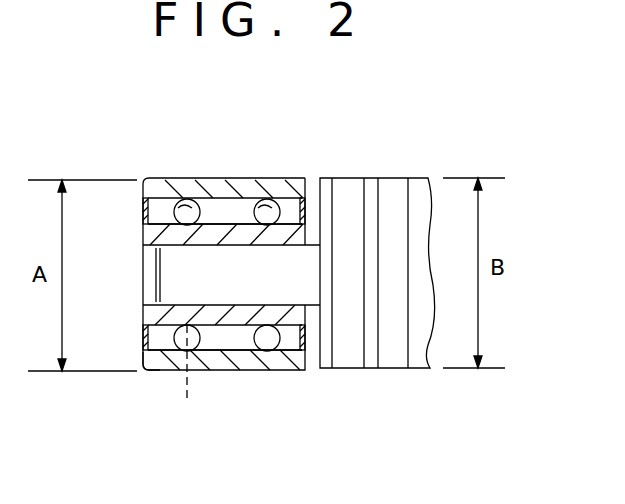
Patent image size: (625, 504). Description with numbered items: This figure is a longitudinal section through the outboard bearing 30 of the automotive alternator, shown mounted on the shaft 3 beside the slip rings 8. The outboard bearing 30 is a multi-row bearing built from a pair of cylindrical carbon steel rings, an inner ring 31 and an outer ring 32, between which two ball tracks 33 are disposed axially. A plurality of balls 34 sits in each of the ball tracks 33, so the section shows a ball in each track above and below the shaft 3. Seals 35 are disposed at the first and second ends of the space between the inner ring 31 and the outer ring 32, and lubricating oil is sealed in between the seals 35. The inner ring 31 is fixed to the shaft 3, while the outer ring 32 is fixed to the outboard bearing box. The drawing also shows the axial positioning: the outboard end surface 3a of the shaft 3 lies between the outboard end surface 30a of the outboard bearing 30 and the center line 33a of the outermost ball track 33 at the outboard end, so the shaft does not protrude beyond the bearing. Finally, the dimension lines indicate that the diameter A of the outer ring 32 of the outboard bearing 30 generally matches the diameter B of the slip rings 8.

The shaft 3 is at (172, 270).
The outboard end surface of the shaft 3a is at (158, 285).
The slip rings 8 is at (395, 187).
The outboard bearing 30 is at (146, 179).
The outboard end surface of the outboard bearing 30a is at (143, 362).
The inner ring 31 is at (150, 235).
The outer ring 32 is at (155, 354).
The ball tracks 33 is at (183, 208).
The center line of the outermost ball track 33a is at (199, 381).
The balls 34 is at (197, 208).
The seals 35 is at (145, 212).